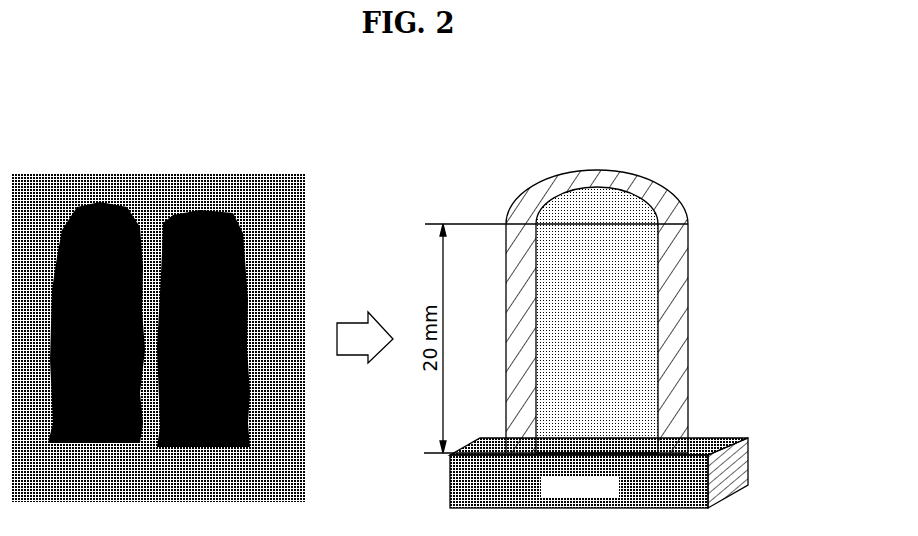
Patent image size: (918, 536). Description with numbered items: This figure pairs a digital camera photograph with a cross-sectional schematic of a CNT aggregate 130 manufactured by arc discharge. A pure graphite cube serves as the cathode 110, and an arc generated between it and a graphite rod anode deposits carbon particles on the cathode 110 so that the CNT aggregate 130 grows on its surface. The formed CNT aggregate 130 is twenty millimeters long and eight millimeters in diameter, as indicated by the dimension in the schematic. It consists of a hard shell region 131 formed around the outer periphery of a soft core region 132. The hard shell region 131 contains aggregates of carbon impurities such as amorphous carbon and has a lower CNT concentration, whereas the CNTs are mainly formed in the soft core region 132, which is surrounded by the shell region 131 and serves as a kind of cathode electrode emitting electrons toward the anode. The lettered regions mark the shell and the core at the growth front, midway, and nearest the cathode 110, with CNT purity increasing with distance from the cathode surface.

The cathode 110 is at (748, 458).
The CNT aggregate 130 is at (603, 269).
The hard shell region 131 is at (688, 293).
The soft core region 132 is at (660, 338).